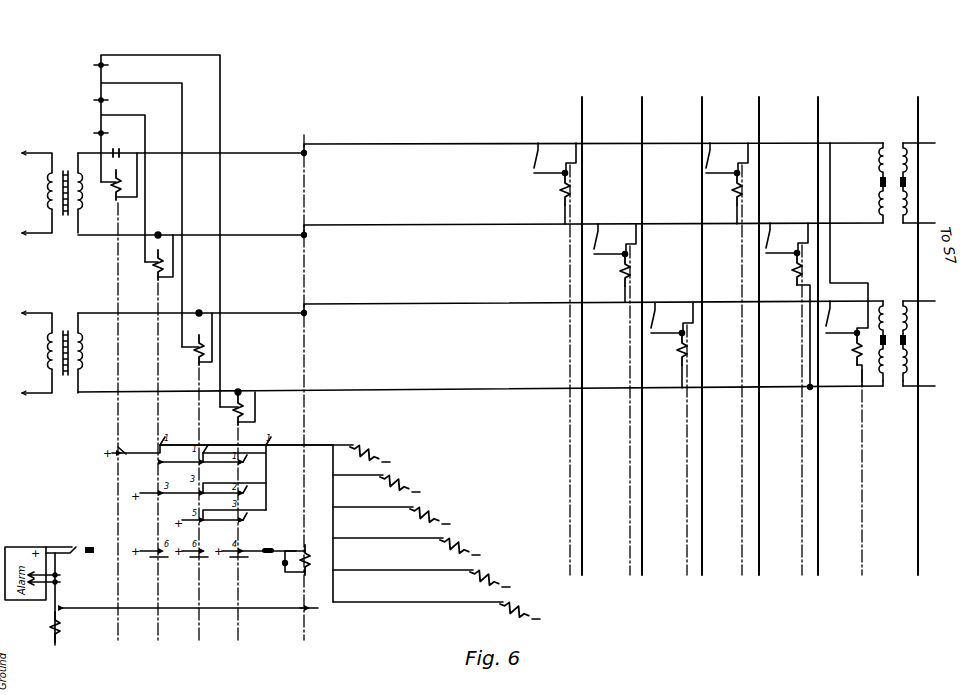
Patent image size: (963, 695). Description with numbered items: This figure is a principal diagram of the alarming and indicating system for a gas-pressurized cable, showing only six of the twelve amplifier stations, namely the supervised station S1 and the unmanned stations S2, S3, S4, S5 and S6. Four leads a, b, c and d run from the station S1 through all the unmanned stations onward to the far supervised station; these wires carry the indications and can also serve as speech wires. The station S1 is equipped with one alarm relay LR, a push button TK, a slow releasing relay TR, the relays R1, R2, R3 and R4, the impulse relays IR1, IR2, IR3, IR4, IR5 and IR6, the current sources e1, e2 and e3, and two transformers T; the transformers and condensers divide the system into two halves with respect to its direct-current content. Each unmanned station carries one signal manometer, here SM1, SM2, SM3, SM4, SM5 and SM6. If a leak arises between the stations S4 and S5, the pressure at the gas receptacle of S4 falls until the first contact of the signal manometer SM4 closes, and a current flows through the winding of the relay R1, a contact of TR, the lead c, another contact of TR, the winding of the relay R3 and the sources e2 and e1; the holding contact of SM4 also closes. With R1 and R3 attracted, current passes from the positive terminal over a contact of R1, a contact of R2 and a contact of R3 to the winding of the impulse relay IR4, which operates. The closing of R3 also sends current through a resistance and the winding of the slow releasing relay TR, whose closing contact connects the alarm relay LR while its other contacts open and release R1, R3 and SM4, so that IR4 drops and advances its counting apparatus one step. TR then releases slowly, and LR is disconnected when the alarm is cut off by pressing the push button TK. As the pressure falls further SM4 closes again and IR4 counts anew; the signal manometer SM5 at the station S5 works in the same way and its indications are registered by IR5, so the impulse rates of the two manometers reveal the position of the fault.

The transformer T is at (62, 162).
The current source e1 is at (92, 136).
The current source e2 is at (92, 103).
The current source e3 is at (92, 68).
The lead a is at (506, 141).
The lead b is at (506, 222).
The lead c is at (506, 301).
The lead d is at (506, 384).
The supervised amplifier station S1 is at (332, 208).
The unmanned amplifier station S2 is at (597, 336).
The unmanned amplifier station S3 is at (657, 336).
The unmanned amplifier station S4 is at (717, 336).
The unmanned amplifier station S5 is at (775, 336).
The unmanned amplifier station S6 is at (843, 336).
The signal manometer SM1 is at (556, 371).
The signal manometer SM2 is at (616, 411).
The signal manometer SM3 is at (673, 451).
The signal manometer SM4 is at (728, 371).
The signal manometer SM5 is at (788, 411).
The signal manometer SM6 is at (848, 371).
The impulse relay IR1 is at (361, 448).
The impulse relay IR2 is at (376, 478).
The impulse relay IR3 is at (391, 510).
The impulse relay IR4 is at (406, 541).
The impulse relay IR5 is at (421, 573).
The impulse relay IR6 is at (436, 605).
The relay R1 is at (119, 406).
The relay R2 is at (159, 446).
The relay R3 is at (197, 485).
The relay R4 is at (237, 524).
The slow releasing relay TR is at (308, 396).
The push button TK is at (73, 542).
The alarm relay LR is at (166, 605).